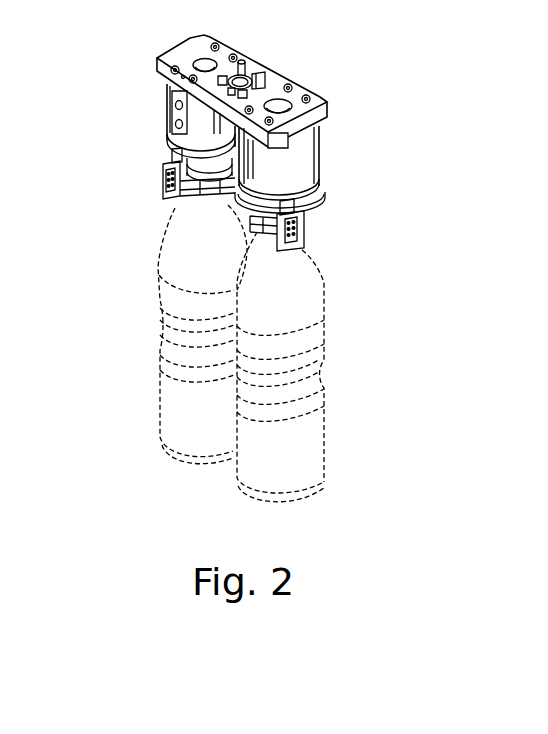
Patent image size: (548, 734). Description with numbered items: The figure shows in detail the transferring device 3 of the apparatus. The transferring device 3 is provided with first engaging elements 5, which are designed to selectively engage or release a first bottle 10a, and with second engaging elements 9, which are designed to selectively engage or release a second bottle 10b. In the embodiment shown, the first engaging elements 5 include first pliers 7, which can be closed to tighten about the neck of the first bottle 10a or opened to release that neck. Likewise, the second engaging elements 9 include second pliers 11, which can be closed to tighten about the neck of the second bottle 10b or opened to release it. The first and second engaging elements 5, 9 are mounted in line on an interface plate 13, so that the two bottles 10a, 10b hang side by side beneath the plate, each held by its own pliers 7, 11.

The transferring device 3 is at (369, 103).
The first engaging elements 5 is at (320, 157).
The first pliers 7 is at (305, 240).
The second engaging elements 9 is at (167, 105).
The second pliers 11 is at (163, 187).
The interface plate 13 is at (268, 67).
The first bottle 10a is at (325, 438).
The second bottle 10b is at (160, 402).